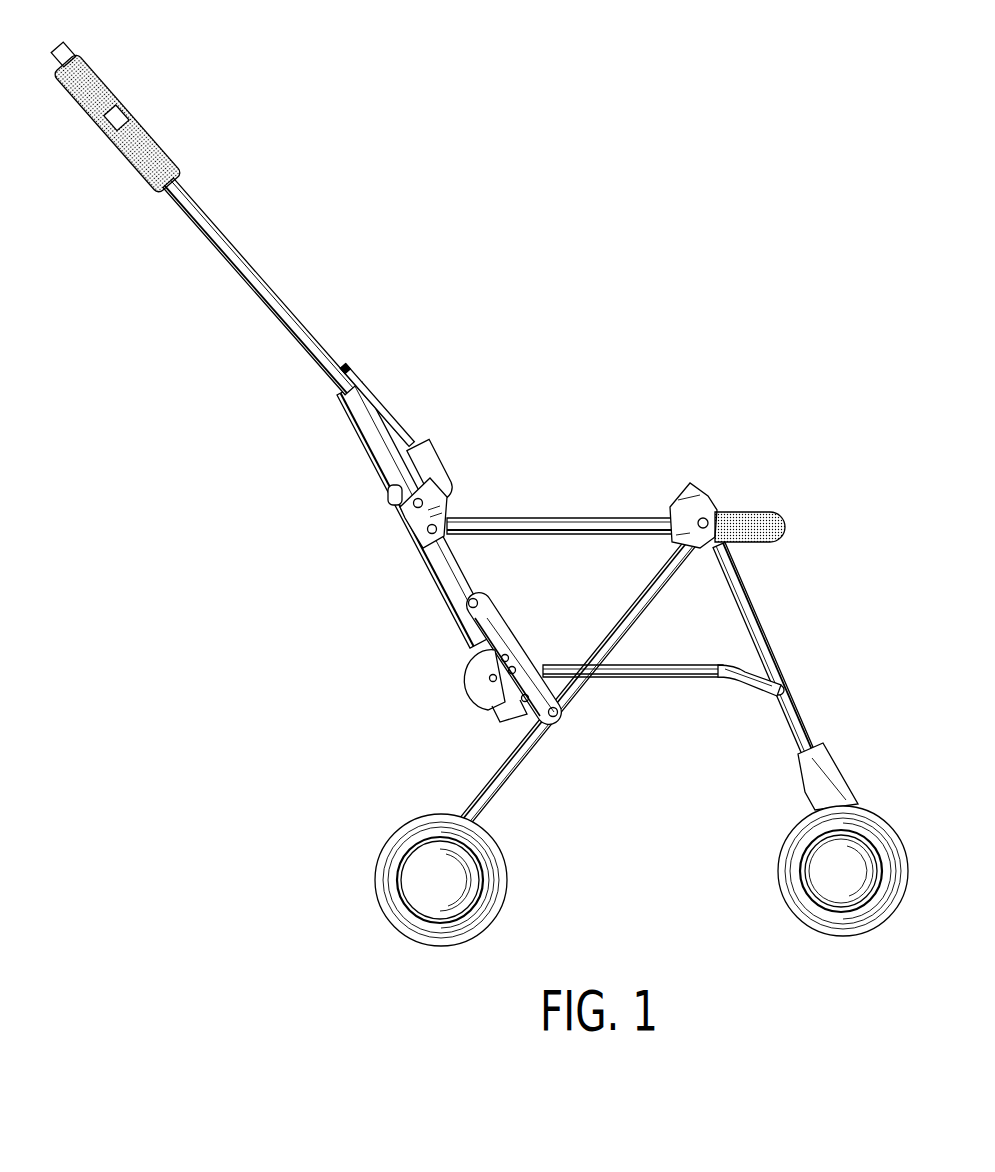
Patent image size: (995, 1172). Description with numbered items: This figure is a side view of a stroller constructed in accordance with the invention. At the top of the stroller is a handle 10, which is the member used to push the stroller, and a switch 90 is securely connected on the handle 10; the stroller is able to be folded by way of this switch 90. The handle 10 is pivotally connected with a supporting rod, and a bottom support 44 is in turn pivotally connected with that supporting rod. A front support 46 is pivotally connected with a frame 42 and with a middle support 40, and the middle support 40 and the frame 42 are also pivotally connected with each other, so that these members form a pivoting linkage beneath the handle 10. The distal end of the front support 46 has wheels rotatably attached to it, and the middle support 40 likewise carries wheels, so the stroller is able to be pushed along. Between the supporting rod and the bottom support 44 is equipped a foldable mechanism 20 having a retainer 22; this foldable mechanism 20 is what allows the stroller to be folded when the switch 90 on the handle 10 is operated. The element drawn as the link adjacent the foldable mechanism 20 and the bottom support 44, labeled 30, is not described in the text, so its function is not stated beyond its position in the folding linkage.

The handle 10 is at (329, 411).
The switch 90 is at (111, 98).
The frame 42 is at (563, 498).
The middle support 40 is at (621, 656).
The front support 46 is at (785, 676).
The retainer 22 is at (633, 643).
The bottom support 44 is at (735, 700).
The locking link 30 is at (518, 649).
The foldable mechanism 20 is at (478, 695).